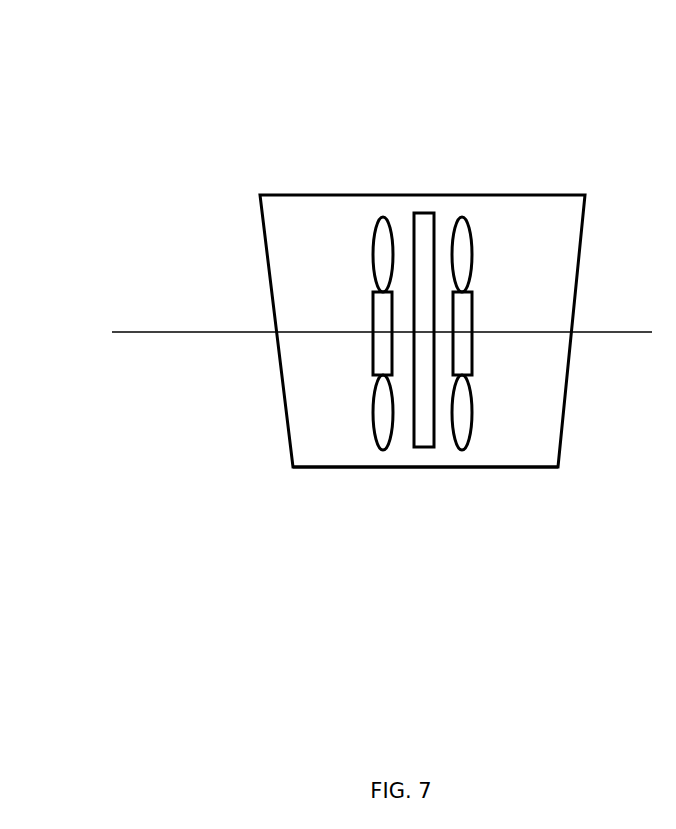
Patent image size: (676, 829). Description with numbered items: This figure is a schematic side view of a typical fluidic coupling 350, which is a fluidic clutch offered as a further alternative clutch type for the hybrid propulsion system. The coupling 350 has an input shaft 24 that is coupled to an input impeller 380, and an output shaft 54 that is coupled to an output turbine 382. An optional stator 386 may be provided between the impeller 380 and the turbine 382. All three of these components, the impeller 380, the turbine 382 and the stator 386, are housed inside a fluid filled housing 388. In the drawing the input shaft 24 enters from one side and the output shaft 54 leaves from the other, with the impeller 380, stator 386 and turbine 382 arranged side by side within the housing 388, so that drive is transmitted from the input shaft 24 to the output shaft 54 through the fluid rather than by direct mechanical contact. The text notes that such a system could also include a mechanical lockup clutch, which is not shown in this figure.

The fluidic coupling 350 is at (243, 115).
The input shaft 24 is at (155, 332).
The output shaft 54 is at (627, 331).
The input impeller 380 is at (383, 217).
The output turbine 382 is at (462, 217).
The stator 386 is at (423, 213).
The fluid filled housing 388 is at (537, 468).